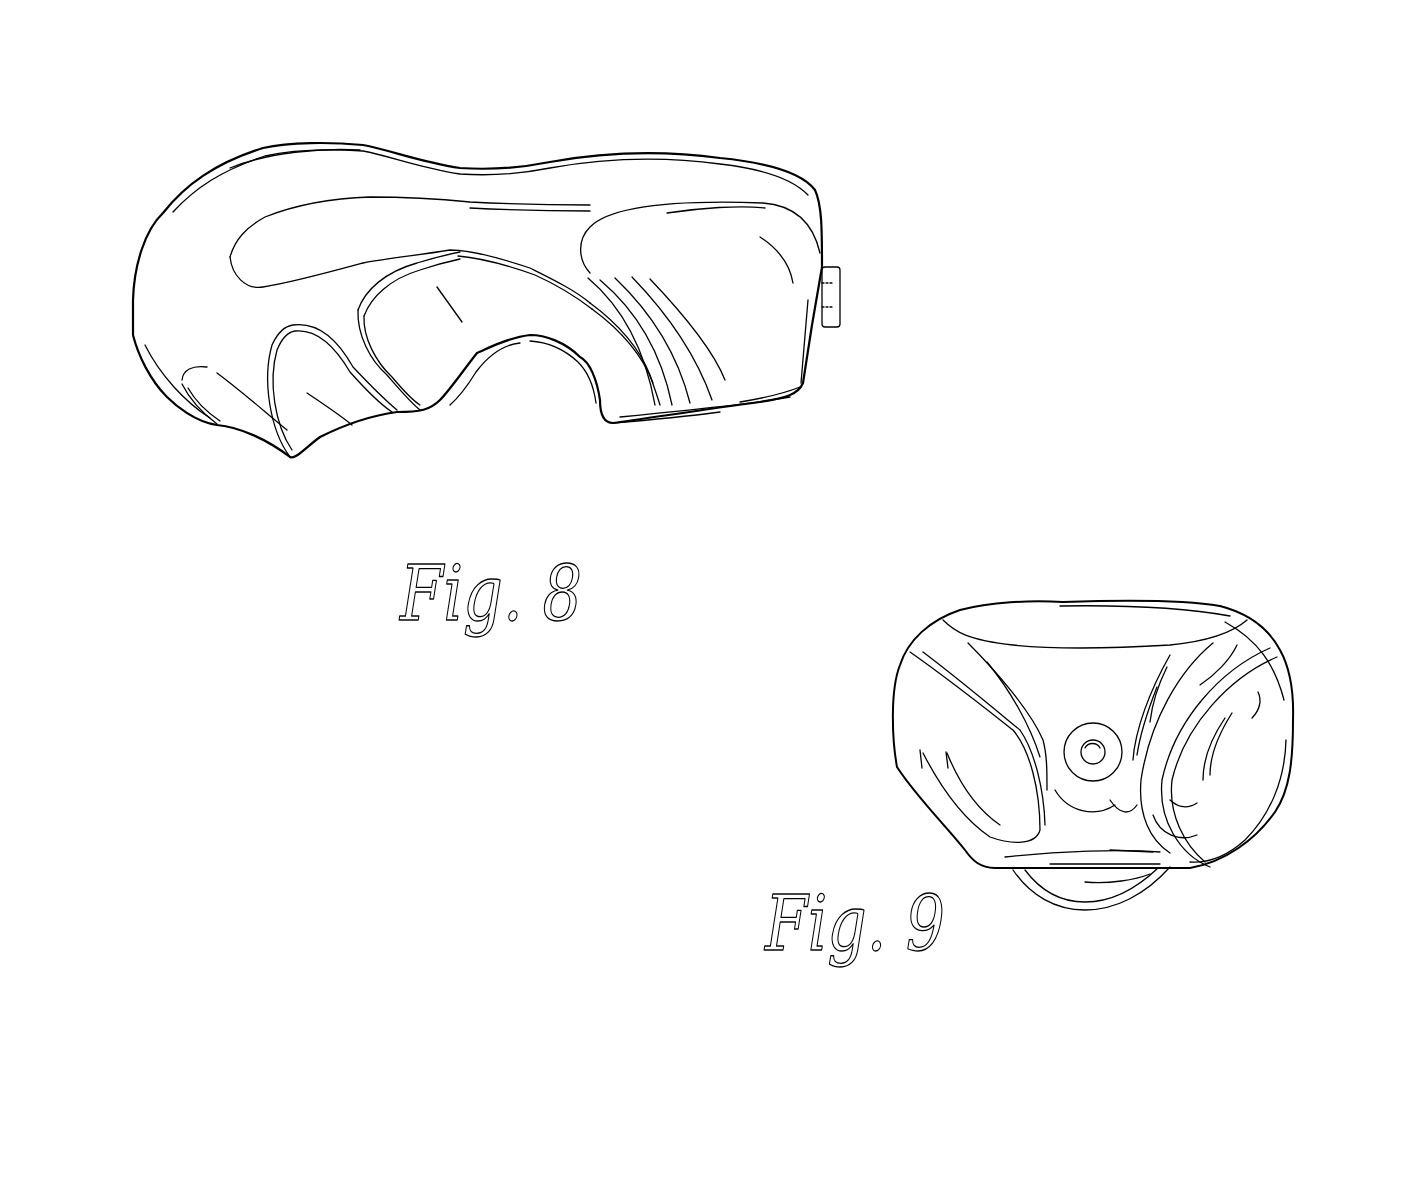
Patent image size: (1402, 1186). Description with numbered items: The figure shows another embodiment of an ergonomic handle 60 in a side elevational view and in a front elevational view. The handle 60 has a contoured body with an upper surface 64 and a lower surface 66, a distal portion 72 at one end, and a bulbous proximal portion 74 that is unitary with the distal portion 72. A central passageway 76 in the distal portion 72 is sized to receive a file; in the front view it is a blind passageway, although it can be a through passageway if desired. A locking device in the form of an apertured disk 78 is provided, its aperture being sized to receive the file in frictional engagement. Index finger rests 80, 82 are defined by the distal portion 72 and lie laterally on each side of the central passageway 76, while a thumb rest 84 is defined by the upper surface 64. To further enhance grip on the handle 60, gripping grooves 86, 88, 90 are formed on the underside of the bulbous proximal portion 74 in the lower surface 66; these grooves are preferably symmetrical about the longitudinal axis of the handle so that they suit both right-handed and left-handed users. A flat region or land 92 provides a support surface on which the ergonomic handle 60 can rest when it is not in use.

In FIG. 8, the ergonomic handle 60 is at (463, 141).
In FIG. 8, the upper surface 64 is at (266, 147).
In FIG. 9, the upper surface 64 is at (1060, 600).
In FIG. 8, the lower surface 66 is at (307, 393).
In FIG. 9, the lower surface 66 is at (1113, 882).
In FIG. 8, the distal portion 72 is at (775, 364).
In FIG. 9, the distal portion 72 is at (1111, 739).
In FIG. 8, the bulbous proximal portion 74 is at (196, 293).
In FIG. 9, the central passageway 76 is at (1100, 765).
In FIG. 8, the apertured disk 78 is at (850, 264).
In FIG. 9, the apertured disk 78 is at (1110, 737).
In FIG. 8, the index finger rest 80 is at (628, 303).
In FIG. 9, the index finger rest 80 is at (978, 742).
In FIG. 9, the index finger rest 82 is at (1205, 755).
In FIG. 9, the thumb rest 84 is at (1130, 620).
In FIG. 8, the gripping groove 86 is at (437, 344).
In FIG. 8, the gripping groove 88 is at (220, 377).
In FIG. 8, the gripping groove 90 is at (227, 407).
In FIG. 8, the flat region or land 92 is at (670, 424).
In FIG. 9, the flat region or land 92 is at (1073, 870).